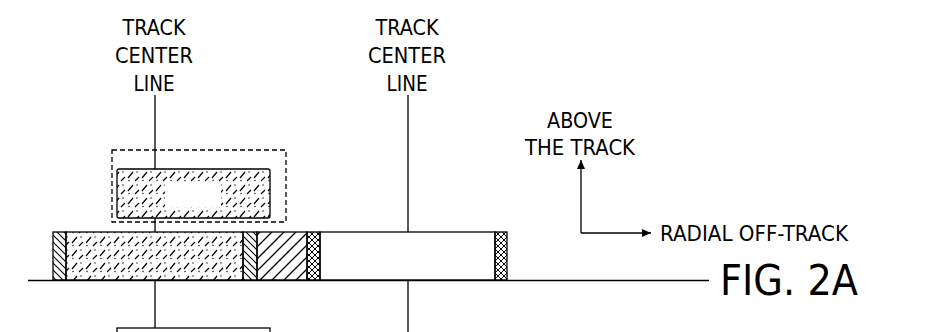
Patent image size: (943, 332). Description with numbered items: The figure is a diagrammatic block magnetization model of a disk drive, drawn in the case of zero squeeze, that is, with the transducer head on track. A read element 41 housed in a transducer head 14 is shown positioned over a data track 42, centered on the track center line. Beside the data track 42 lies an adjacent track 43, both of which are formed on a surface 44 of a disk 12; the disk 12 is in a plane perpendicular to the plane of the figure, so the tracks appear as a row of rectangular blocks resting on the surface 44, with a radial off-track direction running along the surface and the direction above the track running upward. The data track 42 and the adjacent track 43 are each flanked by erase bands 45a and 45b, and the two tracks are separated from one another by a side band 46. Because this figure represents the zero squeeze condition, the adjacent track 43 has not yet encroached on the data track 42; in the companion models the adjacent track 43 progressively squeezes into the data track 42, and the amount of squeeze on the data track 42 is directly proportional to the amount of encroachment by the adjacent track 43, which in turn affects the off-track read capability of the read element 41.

The disk 12 is at (686, 287).
The transducer head 14 is at (291, 163).
The read element 41 is at (227, 170).
The track 42 is at (112, 282).
The adjacent track 43 is at (437, 282).
The surface 44 is at (577, 282).
The erase band 45a is at (58, 282).
The erase band 45b is at (313, 282).
The side band 46 is at (280, 282).